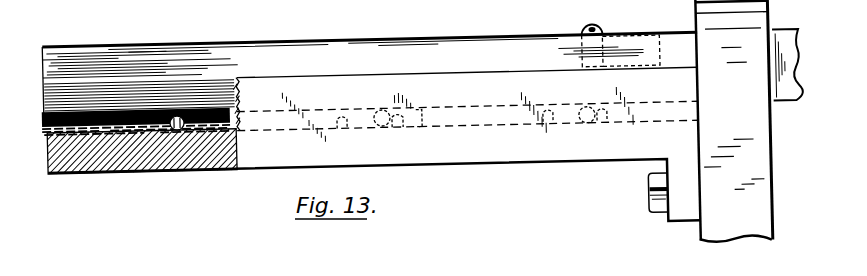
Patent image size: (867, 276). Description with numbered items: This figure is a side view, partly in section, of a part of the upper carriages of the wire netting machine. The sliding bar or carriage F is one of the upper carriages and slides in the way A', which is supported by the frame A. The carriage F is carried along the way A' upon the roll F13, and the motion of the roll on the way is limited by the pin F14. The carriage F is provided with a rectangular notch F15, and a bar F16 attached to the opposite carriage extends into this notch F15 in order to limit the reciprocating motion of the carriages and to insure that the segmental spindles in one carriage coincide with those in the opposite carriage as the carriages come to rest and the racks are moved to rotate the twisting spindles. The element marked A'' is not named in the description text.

The upper carriage F is at (350, 56).
The pin F14 is at (139, 124).
The roll F13 is at (183, 105).
The way A' is at (142, 168).
The hidden mechanism A'' is at (467, 111).
The bar F16 is at (590, 49).
The rectangular notch F15 is at (639, 52).
The frame A is at (425, 128).